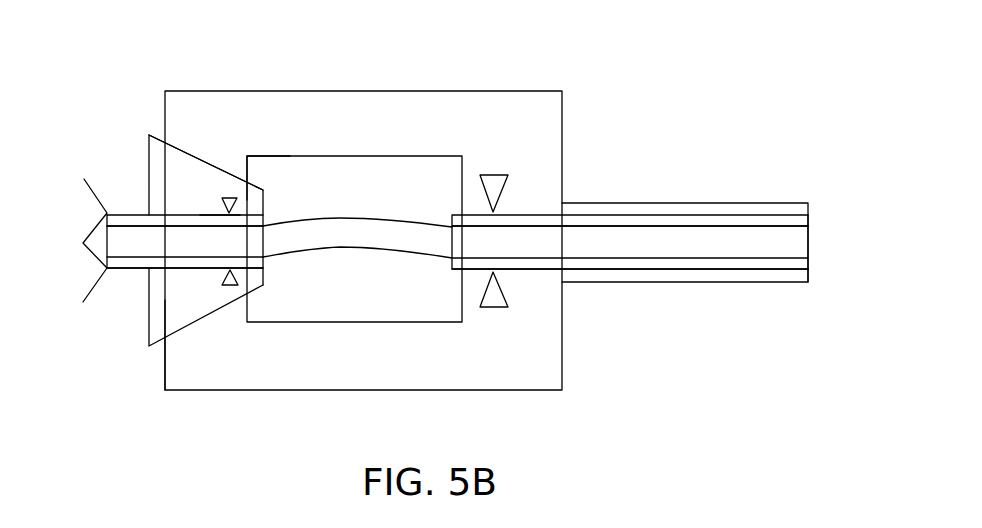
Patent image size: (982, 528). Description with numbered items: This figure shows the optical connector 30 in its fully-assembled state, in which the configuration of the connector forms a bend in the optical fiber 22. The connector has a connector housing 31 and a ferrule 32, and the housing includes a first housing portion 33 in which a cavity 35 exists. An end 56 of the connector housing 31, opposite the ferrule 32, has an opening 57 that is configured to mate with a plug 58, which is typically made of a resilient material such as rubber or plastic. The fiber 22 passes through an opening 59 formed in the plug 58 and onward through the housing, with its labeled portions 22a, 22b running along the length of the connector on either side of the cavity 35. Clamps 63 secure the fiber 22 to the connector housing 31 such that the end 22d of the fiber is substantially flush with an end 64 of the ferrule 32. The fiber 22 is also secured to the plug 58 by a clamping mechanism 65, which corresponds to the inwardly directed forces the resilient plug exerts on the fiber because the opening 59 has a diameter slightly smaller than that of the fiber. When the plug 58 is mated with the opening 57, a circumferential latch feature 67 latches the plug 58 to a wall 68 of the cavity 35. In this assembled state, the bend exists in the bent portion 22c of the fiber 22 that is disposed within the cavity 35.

The optical fiber 22 is at (130, 215).
The inner tube wall 22a is at (122, 248).
The outer tube wall 22b is at (153, 264).
The bent portion 22c is at (352, 220).
The end of the fiber 22d is at (809, 238).
The optical connector 30 is at (665, 64).
The connector housing 31 is at (440, 72).
The ferrule 32 is at (622, 203).
The first housing portion 33 is at (369, 91).
The cavity 35 is at (353, 157).
The end of the connector housing 56 is at (167, 372).
The opening 57 is at (208, 167).
The plug 58 is at (157, 177).
The opening in the plug 59 is at (217, 215).
The clamps 63 is at (492, 173).
The end of the ferrule 64 is at (809, 275).
The clamping mechanism 65 is at (229, 197).
The circumferential latch feature 67 is at (265, 285).
The wall of the cavity 68 is at (248, 168).